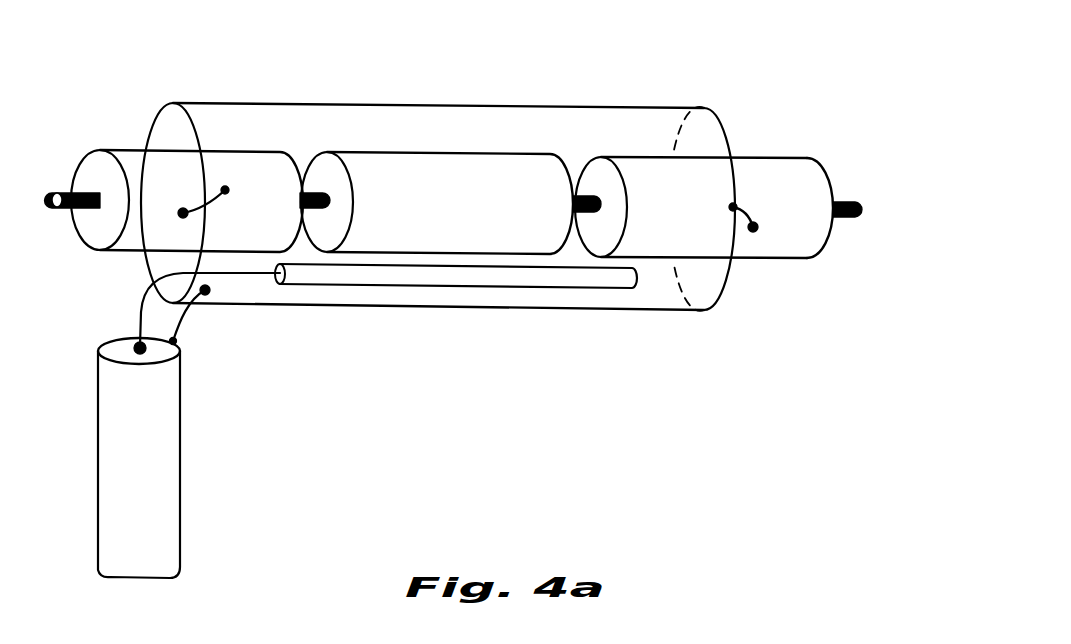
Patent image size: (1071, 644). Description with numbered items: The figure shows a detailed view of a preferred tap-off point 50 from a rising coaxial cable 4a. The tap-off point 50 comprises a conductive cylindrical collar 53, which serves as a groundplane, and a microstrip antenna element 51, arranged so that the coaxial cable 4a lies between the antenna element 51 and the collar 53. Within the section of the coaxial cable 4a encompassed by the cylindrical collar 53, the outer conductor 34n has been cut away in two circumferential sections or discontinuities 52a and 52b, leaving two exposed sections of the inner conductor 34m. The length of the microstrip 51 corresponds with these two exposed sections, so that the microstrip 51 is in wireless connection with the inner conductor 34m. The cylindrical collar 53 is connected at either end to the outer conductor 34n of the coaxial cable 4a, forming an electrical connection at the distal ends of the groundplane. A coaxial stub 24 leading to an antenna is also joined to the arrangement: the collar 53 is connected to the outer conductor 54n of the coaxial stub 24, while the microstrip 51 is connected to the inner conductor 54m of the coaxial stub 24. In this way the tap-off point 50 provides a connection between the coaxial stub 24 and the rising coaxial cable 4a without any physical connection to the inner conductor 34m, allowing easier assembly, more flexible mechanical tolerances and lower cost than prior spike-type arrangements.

The coaxial cable 4a is at (478, 219).
The conductive cylindrical collar 53 is at (208, 94).
The tap-off point 50 is at (441, 329).
The circumferential discontinuity 52a is at (318, 165).
The circumferential discontinuity 52b is at (742, 148).
The outer conductor 34n is at (830, 182).
The inner conductor 34m is at (863, 218).
The microstrip antenna element 51 is at (605, 290).
The coaxial stub 24 is at (180, 388).
The inner conductor of coaxial stub 54m is at (134, 346).
The outer conductor of coaxial stub 54n is at (100, 362).